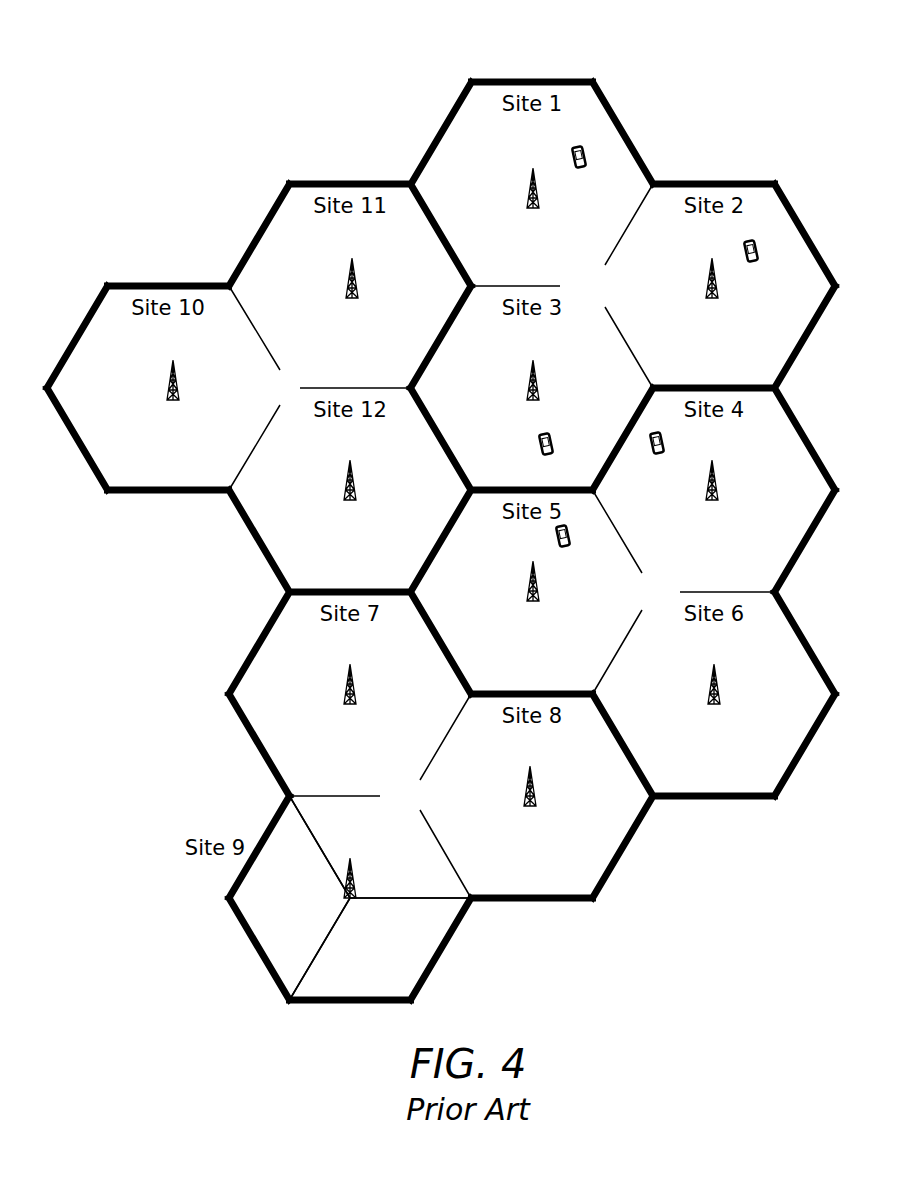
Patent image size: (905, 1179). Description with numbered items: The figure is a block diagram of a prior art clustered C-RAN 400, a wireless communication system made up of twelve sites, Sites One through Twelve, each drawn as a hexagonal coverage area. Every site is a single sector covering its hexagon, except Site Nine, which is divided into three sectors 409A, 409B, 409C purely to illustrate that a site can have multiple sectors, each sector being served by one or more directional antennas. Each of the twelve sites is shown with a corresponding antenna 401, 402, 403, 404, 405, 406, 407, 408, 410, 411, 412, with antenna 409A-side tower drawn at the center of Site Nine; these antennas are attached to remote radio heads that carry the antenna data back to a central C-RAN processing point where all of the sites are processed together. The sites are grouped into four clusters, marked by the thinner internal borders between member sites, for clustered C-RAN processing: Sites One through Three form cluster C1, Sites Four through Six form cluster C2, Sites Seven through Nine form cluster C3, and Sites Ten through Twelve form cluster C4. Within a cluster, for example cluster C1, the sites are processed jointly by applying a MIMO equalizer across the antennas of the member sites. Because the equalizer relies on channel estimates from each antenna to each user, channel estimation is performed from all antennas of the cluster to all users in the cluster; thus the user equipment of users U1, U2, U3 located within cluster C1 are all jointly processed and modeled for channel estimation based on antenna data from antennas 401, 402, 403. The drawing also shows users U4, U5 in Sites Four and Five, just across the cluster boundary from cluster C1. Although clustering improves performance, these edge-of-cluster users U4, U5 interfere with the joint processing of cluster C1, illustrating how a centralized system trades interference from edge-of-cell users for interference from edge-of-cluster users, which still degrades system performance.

The C-RAN 400 is at (276, 99).
The antenna 401 is at (534, 199).
The antenna 402 is at (712, 290).
The antenna 403 is at (533, 392).
The antenna 404 is at (714, 492).
The antenna 405 is at (533, 593).
The antenna 406 is at (714, 696).
The antenna 407 is at (350, 696).
The antenna 408 is at (530, 798).
The sector 409A is at (381, 847).
The sector 409B is at (381, 949).
The sector 409C is at (308, 898).
The antenna 410 is at (171, 393).
The antenna 411 is at (352, 290).
The antenna 412 is at (350, 492).
The user U1 is at (558, 444).
The user U2 is at (591, 157).
The user U3 is at (764, 251).
The user U4 is at (576, 536).
The user U5 is at (669, 443).
The cluster C1 is at (592, 287).
The cluster C2 is at (647, 593).
The cluster C3 is at (408, 794).
The cluster C4 is at (280, 389).